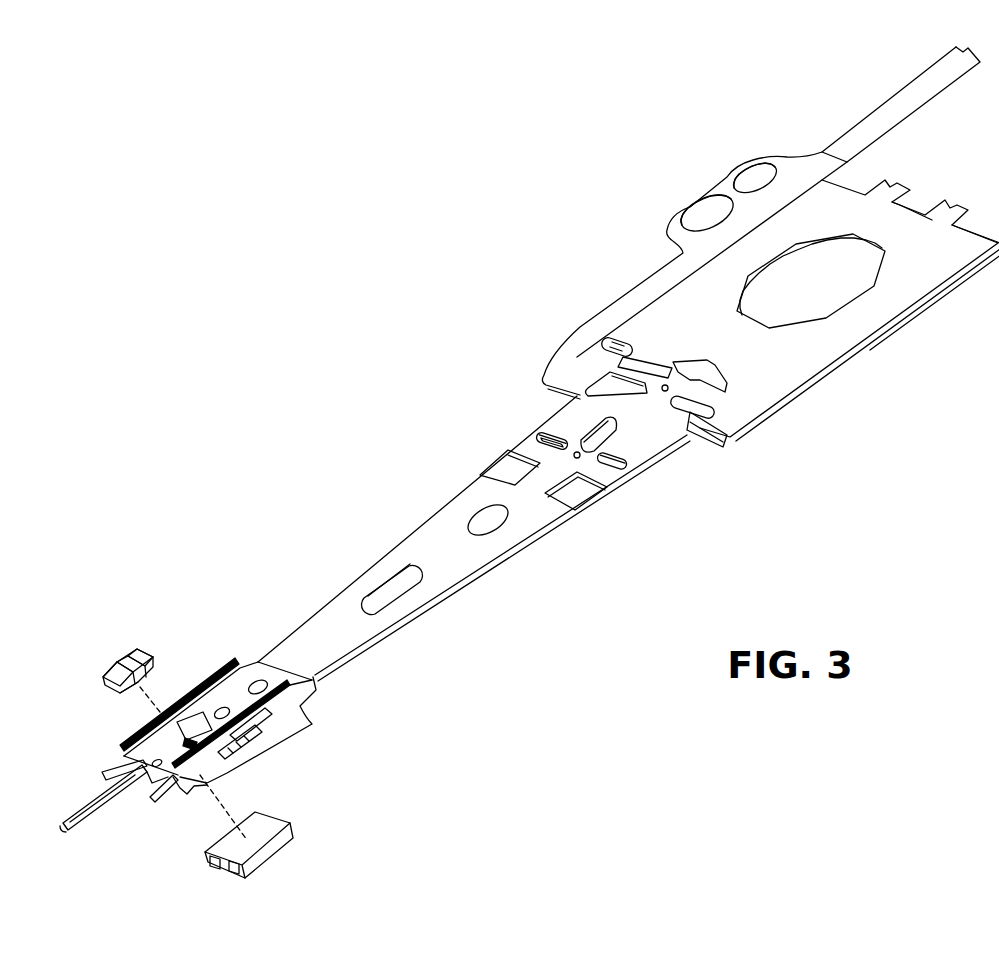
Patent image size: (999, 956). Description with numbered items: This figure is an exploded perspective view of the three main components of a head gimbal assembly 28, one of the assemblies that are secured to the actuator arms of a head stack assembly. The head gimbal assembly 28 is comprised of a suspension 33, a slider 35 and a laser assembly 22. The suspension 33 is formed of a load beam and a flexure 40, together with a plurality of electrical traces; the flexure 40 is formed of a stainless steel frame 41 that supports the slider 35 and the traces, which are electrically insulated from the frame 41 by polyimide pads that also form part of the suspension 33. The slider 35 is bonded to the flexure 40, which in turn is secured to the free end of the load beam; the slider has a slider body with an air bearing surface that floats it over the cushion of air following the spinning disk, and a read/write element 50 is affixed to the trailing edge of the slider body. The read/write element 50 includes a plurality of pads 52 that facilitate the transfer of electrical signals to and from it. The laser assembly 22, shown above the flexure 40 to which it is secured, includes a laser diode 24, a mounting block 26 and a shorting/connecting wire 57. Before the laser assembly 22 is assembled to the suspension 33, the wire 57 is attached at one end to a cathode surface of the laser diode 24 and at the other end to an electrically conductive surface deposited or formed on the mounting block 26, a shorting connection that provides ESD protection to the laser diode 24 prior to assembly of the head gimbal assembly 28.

The laser assembly 22 is at (126, 645).
The laser diode 24 is at (150, 664).
The mounting block 26 is at (105, 676).
The head gimbal assembly 28 is at (455, 390).
The suspension 33 is at (466, 585).
The slider 35 is at (300, 853).
The flexure 40 is at (105, 782).
The stainless steel frame 41 is at (300, 706).
The read/write element 50 is at (233, 876).
The pads 52 is at (210, 858).
The shorting/connecting wire 57 is at (117, 650).